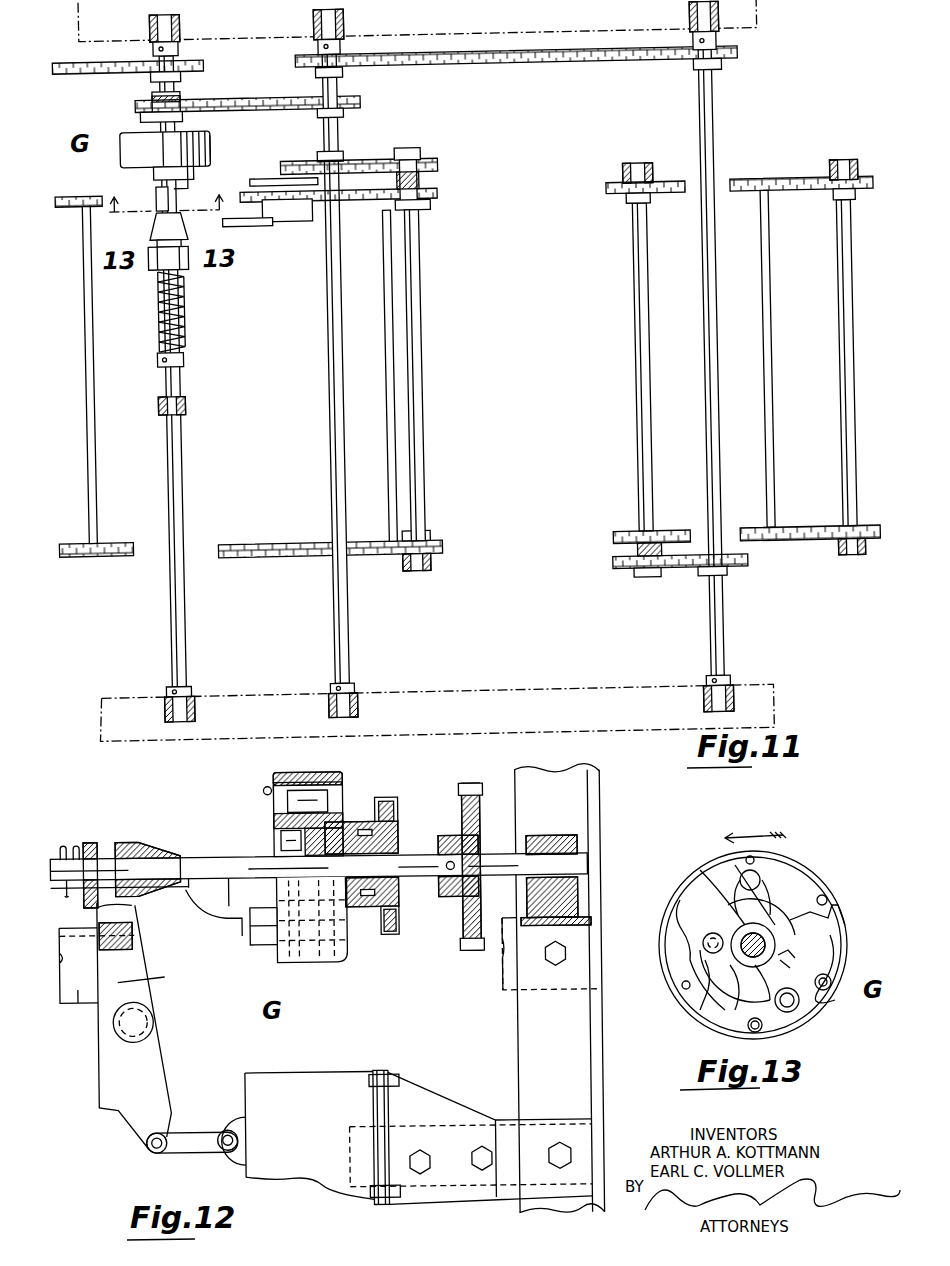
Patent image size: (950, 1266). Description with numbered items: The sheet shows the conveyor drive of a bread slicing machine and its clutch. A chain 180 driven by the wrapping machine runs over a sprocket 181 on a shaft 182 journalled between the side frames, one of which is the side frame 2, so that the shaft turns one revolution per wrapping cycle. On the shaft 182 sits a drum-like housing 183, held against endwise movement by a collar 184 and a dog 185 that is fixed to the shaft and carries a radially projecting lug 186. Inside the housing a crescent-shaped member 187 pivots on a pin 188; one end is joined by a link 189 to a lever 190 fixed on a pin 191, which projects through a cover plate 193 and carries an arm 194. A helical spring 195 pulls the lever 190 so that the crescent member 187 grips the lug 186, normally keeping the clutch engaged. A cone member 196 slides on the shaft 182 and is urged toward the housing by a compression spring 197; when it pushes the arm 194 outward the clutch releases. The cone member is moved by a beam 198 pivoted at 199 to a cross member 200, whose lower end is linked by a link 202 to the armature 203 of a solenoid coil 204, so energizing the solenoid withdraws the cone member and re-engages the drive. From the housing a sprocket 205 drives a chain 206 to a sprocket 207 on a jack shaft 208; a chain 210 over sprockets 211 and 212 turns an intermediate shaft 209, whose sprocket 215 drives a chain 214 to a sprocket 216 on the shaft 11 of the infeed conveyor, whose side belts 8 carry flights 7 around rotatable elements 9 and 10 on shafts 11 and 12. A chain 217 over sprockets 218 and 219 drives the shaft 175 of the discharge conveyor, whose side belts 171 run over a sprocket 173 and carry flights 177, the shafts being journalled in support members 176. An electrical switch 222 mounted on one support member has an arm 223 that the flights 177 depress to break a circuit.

In FIG. 12, the side frame 2 is at (602, 838).
In FIG. 11, the upstanding flights 7 is at (772, 280).
In FIG. 11, the side belts or chains 8 is at (796, 185).
In FIG. 11, the rotatable element 9 is at (654, 200).
In FIG. 11, the rotatable element 10 is at (859, 200).
In FIG. 11, the shaft 11 is at (644, 457).
In FIG. 11, the shaft 12 is at (854, 286).
In FIG. 11, the endless side belts or chains 171 is at (70, 189).
In FIG. 11, the sprocket 173 is at (434, 206).
In FIG. 11, the shaft 175 is at (420, 335).
In FIG. 11, the support members 176 is at (268, 175).
In FIG. 11, the flights 177 is at (86, 436).
In FIG. 11, the chain 180 is at (108, 72).
In FIG. 12, the chain 180 is at (483, 790).
In FIG. 11, the sprocket 181 is at (187, 72).
In FIG. 12, the sprocket 181 is at (473, 952).
In FIG. 11, the shaft 182 is at (176, 478).
In FIG. 12, the shaft 182 is at (225, 846).
In FIG. 13, the shaft 182 is at (762, 935).
In FIG. 11, the drum-like housing 183 is at (216, 147).
In FIG. 13, the drum-like housing 183 is at (835, 890).
In FIG. 11, the collar 184 is at (158, 90).
In FIG. 12, the collar 184 is at (414, 890).
In FIG. 12, the dog 185 is at (342, 830).
In FIG. 13, the dog 185 is at (708, 890).
In FIG. 13, the radially projecting lug 186 is at (790, 955).
In FIG. 12, the crescent-shaped member 187 is at (276, 832).
In FIG. 13, the crescent-shaped member 187 is at (770, 870).
In FIG. 12, the pin 188 is at (322, 790).
In FIG. 13, the pin 188 is at (740, 880).
In FIG. 13, the link 189 is at (703, 940).
In FIG. 12, the lever 190 is at (322, 966).
In FIG. 13, the lever 190 is at (705, 964).
In FIG. 12, the pin 191 is at (251, 942).
In FIG. 13, the pin 191 is at (795, 1008).
In FIG. 11, the cover plate 193 is at (212, 158).
In FIG. 12, the cover plate 193 is at (266, 790).
In FIG. 11, the arm 194 is at (160, 194).
In FIG. 12, the arm 194 is at (232, 910).
In FIG. 13, the arm 194 is at (728, 1012).
In FIG. 13, the helical spring 195 is at (845, 925).
In FIG. 11, the cone member 196 is at (150, 254).
In FIG. 12, the cone member 196 is at (140, 831).
In FIG. 11, the helical compression spring 197 is at (184, 318).
In FIG. 12, the helical compression spring 197 is at (64, 846).
In FIG. 12, the beam 198 is at (140, 975).
In FIG. 12, the pivot 199 is at (140, 1020).
In FIG. 12, the cross member 200 is at (78, 988).
In FIG. 12, the link 202 is at (188, 1148).
In FIG. 12, the armature 203 is at (232, 1120).
In FIG. 12, the electrical solenoid coil 204 is at (302, 1078).
In FIG. 11, the sprocket 205 is at (146, 110).
In FIG. 12, the sprocket 205 is at (393, 936).
In FIG. 11, the chain 206 is at (248, 100).
In FIG. 12, the chain 206 is at (399, 813).
In FIG. 11, the sprocket 207 is at (349, 109).
In FIG. 11, the jack shaft 208 is at (329, 300).
In FIG. 11, the intermediate shaft 209 is at (718, 143).
In FIG. 11, the chain 210 is at (502, 66).
In FIG. 11, the sprocket 211 is at (349, 71).
In FIG. 11, the sprocket 212 is at (728, 70).
In FIG. 11, the chain 214 is at (690, 573).
In FIG. 11, the sprocket 215 is at (723, 580).
In FIG. 11, the sprocket 216 is at (630, 582).
In FIG. 11, the chain 217 is at (414, 147).
In FIG. 11, the sprocket 218 is at (348, 155).
In FIG. 11, the sprocket 219 is at (441, 164).
In FIG. 11, the electrical switch 222 is at (302, 218).
In FIG. 11, the arm 223 is at (250, 222).